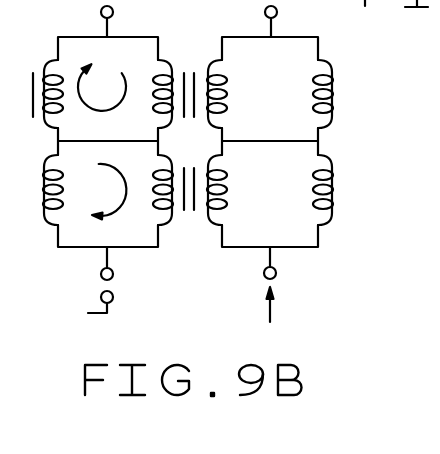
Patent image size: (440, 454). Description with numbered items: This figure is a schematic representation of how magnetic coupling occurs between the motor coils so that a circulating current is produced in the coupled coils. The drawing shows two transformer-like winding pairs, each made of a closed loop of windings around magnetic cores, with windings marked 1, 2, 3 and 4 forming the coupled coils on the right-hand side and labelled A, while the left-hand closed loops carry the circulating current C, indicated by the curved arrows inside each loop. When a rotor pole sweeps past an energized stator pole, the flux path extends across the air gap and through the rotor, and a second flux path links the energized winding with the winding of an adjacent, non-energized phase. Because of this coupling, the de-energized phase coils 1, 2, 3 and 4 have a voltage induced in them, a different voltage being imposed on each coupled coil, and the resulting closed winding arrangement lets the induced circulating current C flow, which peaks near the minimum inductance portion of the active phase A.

The winding 1 is at (223, 94).
The winding 2 is at (225, 190).
The winding 3 is at (330, 94).
The winding 4 is at (332, 190).
The transformer A is at (266, 66).
The circulating current C is at (102, 82).